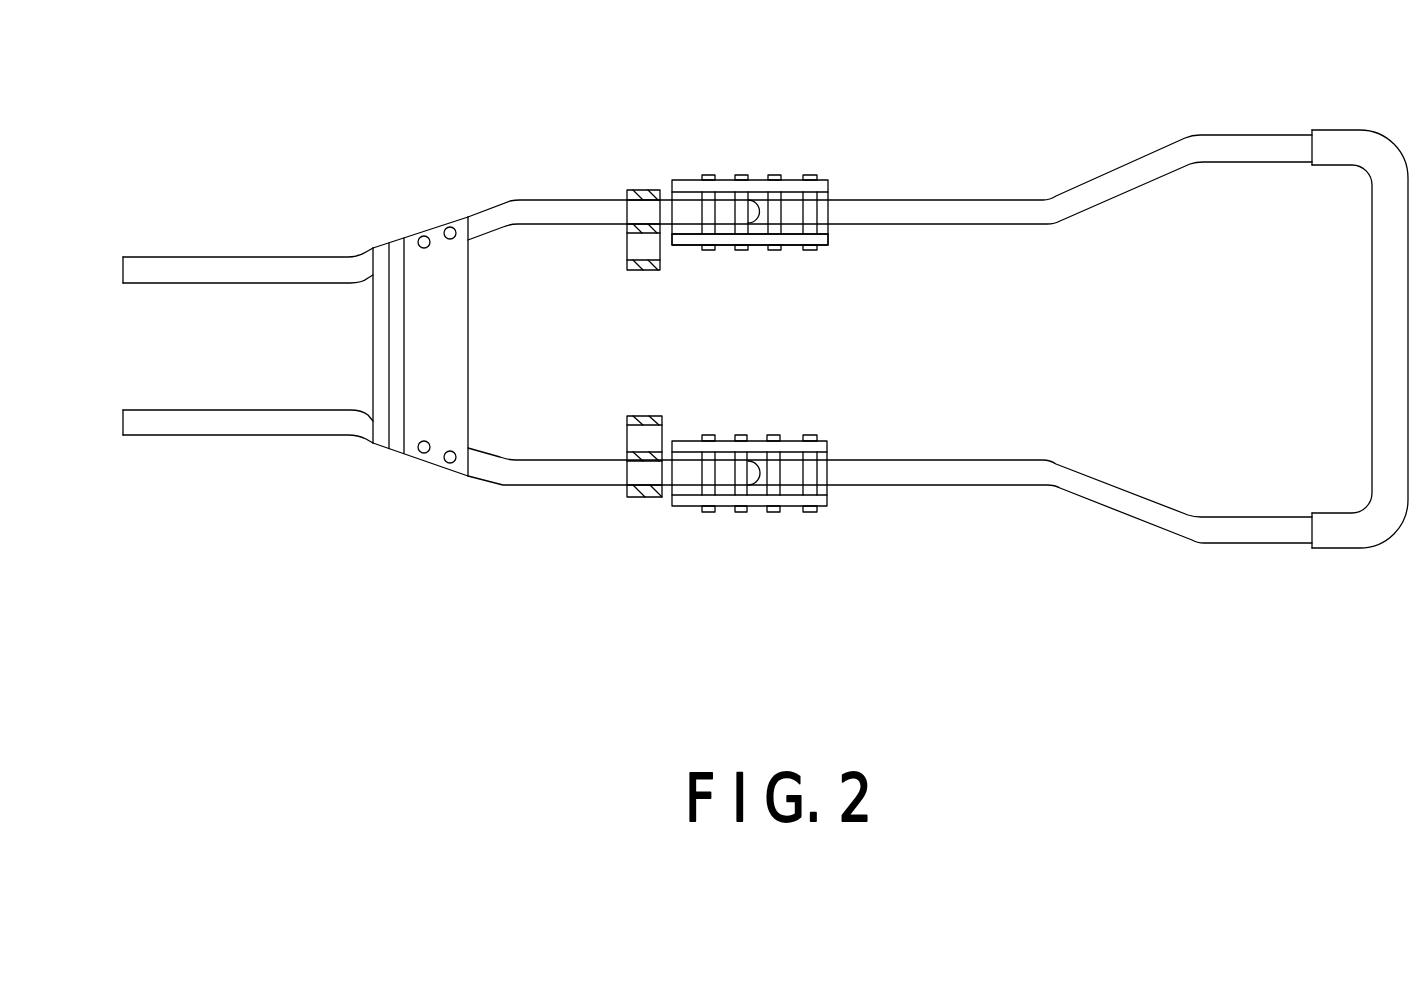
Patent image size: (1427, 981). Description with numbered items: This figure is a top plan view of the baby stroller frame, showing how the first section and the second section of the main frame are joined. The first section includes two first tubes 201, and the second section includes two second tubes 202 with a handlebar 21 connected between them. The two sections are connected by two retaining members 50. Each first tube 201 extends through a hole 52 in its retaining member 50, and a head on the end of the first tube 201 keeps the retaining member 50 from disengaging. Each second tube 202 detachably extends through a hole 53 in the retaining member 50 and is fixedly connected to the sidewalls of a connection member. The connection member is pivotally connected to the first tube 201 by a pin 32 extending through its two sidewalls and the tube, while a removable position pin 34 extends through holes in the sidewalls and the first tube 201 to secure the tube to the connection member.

The handlebar 21 is at (1385, 158).
The first tube 201 is at (528, 210).
The second tube 202 is at (962, 209).
The pin 32 is at (737, 174).
The position pin 34 is at (708, 250).
The retaining member 50 is at (648, 190).
The hole 52 is at (630, 198).
The hole 53 is at (630, 250).